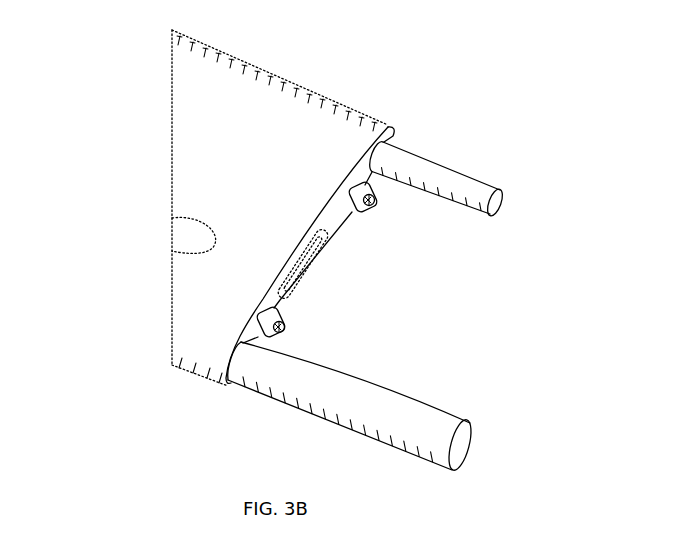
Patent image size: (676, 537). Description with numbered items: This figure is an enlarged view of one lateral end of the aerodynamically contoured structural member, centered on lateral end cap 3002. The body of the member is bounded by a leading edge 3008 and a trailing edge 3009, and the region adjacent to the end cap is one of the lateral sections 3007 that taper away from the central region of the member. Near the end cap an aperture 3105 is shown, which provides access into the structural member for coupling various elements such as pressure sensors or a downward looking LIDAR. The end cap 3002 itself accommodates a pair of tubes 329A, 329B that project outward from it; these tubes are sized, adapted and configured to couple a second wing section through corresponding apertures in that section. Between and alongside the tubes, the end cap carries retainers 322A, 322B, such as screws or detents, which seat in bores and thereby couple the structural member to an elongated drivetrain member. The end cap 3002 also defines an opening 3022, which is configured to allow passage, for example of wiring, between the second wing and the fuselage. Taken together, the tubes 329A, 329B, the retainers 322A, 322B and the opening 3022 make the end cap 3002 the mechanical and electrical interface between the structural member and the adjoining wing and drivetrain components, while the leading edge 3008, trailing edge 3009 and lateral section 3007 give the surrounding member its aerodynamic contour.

The lateral end cap 3002 is at (335, 222).
The lateral section 3007 is at (225, 197).
The leading edge 3008 is at (186, 372).
The trailing edge 3009 is at (270, 79).
The opening 3022 is at (297, 272).
The aperture 3105 is at (186, 232).
The retainer 322A is at (284, 327).
The retainer 322B is at (370, 207).
The tube 329A is at (474, 445).
The tube 329B is at (508, 212).